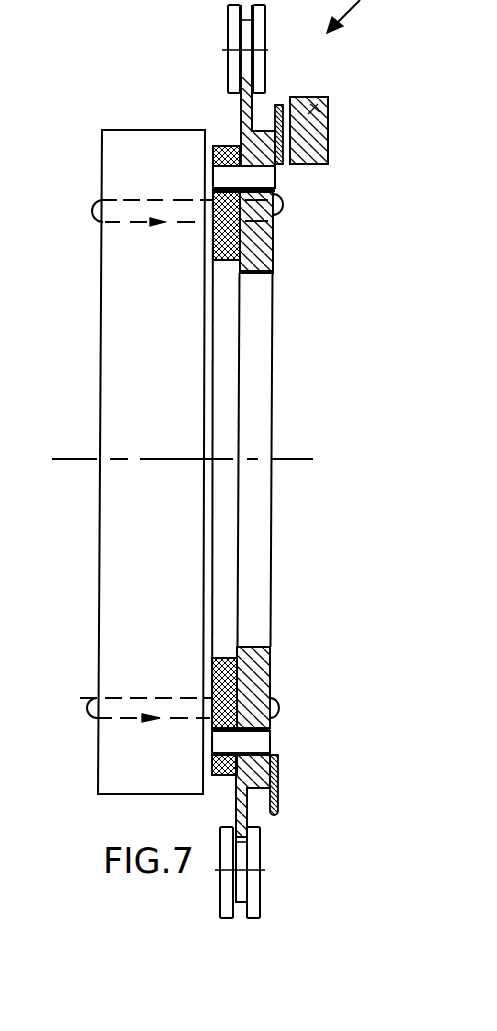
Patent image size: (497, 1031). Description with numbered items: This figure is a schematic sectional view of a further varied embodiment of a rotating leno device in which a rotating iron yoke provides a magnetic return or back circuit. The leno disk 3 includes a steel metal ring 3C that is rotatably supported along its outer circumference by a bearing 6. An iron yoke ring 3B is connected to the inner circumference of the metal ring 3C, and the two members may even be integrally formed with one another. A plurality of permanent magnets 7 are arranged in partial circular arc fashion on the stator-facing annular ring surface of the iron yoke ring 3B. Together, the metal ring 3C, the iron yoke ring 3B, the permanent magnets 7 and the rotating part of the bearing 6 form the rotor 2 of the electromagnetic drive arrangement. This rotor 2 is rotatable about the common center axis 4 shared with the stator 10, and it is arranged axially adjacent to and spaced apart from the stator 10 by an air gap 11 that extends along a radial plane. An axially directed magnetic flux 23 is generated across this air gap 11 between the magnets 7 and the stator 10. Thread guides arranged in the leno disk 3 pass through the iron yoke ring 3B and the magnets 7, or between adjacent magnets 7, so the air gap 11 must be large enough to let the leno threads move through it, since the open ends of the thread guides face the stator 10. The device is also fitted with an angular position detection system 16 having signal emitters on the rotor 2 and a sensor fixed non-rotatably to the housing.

The rotor 2 is at (314, 263).
The leno disk 3 is at (283, 288).
The iron yoke ring 3B is at (273, 204).
The metal ring 3C is at (242, 108).
The common center axis 4 is at (294, 457).
The bearing 6 is at (232, 30).
The permanent magnets 7 is at (264, 245).
The stator 10 is at (125, 247).
The air gap 11 is at (253, 670).
The angular position detection system 16 is at (279, 105).
The magnetic flux 23 is at (90, 206).